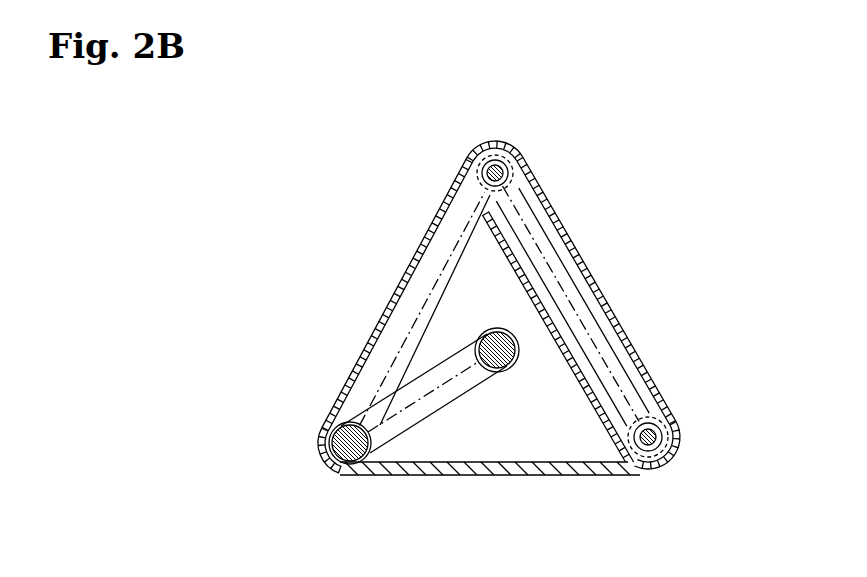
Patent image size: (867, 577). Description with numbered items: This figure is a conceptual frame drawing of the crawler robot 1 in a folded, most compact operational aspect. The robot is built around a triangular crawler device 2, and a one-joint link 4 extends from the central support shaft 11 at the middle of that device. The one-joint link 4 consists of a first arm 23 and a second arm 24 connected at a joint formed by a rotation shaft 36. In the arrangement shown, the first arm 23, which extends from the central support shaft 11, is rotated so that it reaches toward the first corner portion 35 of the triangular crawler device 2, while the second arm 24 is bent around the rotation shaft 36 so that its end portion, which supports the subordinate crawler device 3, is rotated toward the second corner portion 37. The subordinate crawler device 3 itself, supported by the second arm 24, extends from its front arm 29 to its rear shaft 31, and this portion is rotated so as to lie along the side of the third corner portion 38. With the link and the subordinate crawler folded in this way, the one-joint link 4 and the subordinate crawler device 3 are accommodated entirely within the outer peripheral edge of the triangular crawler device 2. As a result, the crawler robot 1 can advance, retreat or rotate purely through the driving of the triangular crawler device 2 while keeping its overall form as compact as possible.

The crawler robot 1 is at (621, 212).
The triangular crawler device 2 is at (410, 206).
The subordinate crawler device 3 is at (632, 324).
The one-joint link 4 is at (417, 440).
The central support shaft 11 is at (507, 372).
The first arm 23 is at (458, 395).
The second arm 24 is at (393, 326).
The front arm 29 is at (523, 167).
The rear shaft 31 is at (657, 437).
The first corner portion 35 is at (319, 462).
The rotation shaft 36 is at (352, 465).
The second corner portion 37 is at (487, 140).
The third corner portion 38 is at (676, 461).